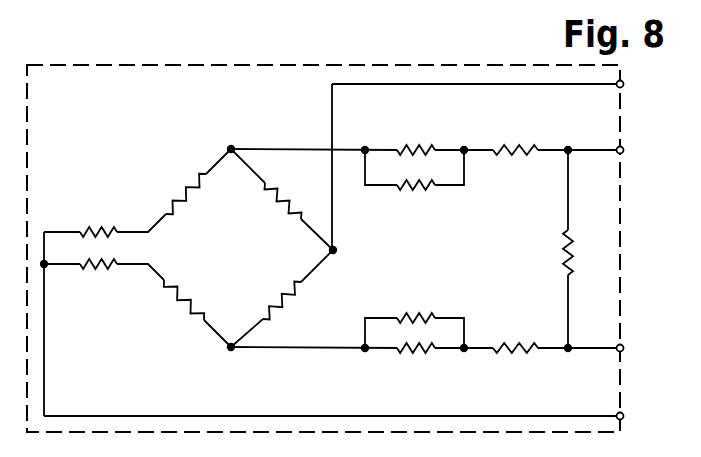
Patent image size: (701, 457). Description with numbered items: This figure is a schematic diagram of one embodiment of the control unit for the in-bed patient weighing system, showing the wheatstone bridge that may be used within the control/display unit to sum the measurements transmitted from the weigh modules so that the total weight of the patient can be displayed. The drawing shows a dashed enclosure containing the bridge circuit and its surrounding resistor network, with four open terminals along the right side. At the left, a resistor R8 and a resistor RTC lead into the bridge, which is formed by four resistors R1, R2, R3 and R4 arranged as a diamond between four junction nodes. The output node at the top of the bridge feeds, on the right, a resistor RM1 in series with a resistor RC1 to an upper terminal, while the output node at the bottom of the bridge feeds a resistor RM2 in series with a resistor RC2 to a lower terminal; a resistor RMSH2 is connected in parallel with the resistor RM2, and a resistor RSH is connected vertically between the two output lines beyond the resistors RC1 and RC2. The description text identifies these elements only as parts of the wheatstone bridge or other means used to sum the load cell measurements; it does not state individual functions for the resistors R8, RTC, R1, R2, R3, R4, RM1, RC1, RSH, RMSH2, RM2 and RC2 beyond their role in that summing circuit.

The resistor R8 is at (98, 218).
The temperature compensation resistor RTC is at (103, 284).
The bridge resistor R1 is at (192, 204).
The bridge resistor R2 is at (276, 210).
The bridge resistor R3 is at (276, 295).
The bridge resistor R4 is at (193, 296).
The measuring resistor RM1 is at (421, 150).
The connection resistor RC1 is at (516, 134).
The shunt resistor RSH is at (543, 252).
The measuring shunt resistor RMSH2 is at (432, 299).
The measuring resistor RM2 is at (420, 370).
The connection resistor RC2 is at (517, 370).